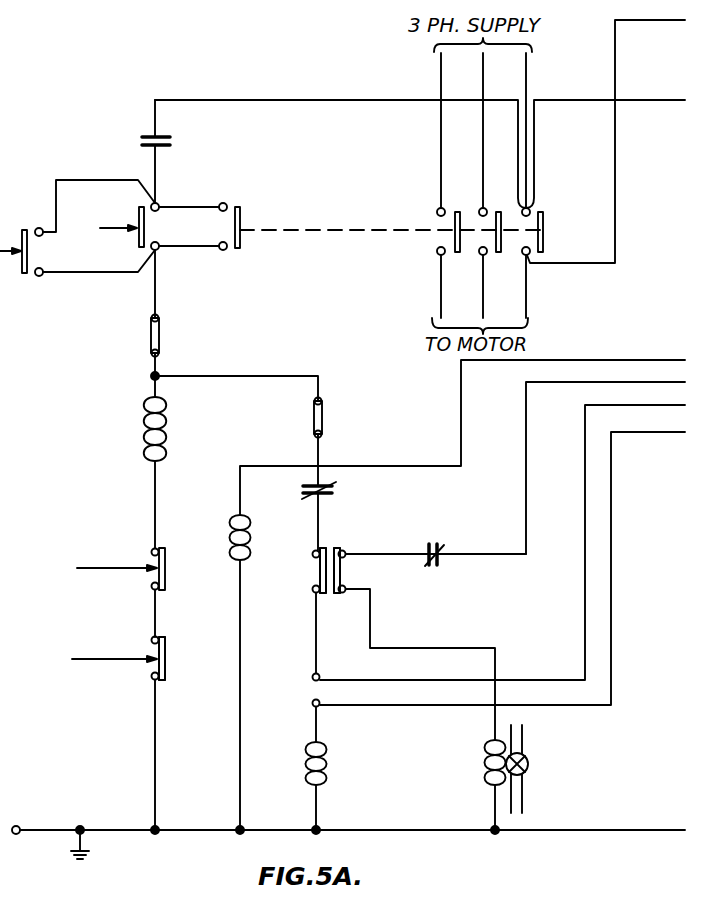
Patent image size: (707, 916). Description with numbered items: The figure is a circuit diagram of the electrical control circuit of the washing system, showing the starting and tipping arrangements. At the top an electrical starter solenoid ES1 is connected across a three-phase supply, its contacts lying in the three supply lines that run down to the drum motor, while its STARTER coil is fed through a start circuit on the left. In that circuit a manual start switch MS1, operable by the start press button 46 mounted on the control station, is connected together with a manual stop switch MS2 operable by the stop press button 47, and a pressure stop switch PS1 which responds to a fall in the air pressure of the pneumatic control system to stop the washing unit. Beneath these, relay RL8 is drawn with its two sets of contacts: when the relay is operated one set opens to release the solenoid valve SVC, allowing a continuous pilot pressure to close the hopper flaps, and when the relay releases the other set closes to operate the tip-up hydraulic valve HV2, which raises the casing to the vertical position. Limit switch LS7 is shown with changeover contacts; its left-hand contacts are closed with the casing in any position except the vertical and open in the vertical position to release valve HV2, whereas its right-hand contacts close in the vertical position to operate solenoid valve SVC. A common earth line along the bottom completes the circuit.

The start press button 46 is at (25, 230).
The stop press button 47 is at (166, 648).
The electrical starter solenoid ES1 is at (413, 142).
The manual start switch MS1 is at (94, 228).
The manual stop switch MS2 is at (118, 659).
The pressure stop switch PS1 is at (121, 568).
The relay RL8 is at (251, 539).
The limit switch LS7 is at (334, 560).
The tip-up hydraulic valve HV2 is at (334, 763).
The solenoid valve SVC is at (489, 769).
The starter coil STARTER is at (114, 472).